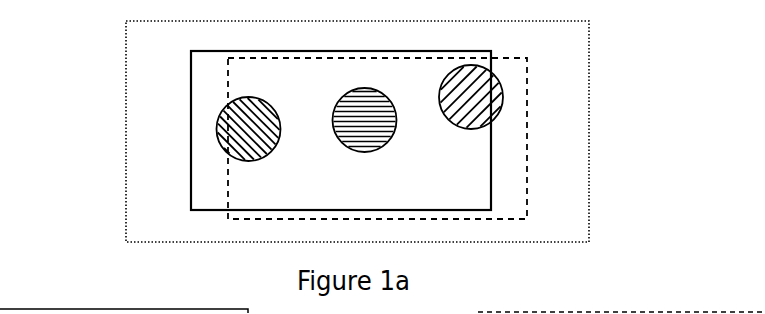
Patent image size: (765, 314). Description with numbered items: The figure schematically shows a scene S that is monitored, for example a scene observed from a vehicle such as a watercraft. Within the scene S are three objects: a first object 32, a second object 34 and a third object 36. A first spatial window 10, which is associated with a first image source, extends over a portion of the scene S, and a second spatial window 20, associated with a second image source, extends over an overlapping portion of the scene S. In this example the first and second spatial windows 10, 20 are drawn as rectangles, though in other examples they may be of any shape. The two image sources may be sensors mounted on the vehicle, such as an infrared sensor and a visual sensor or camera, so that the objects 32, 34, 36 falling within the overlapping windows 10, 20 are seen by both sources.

The scene S is at (589, 154).
The first spatial window 10 is at (191, 87).
The second spatial window 20 is at (527, 95).
The first object 32 is at (271, 160).
The second object 34 is at (383, 152).
The third object 36 is at (459, 131).